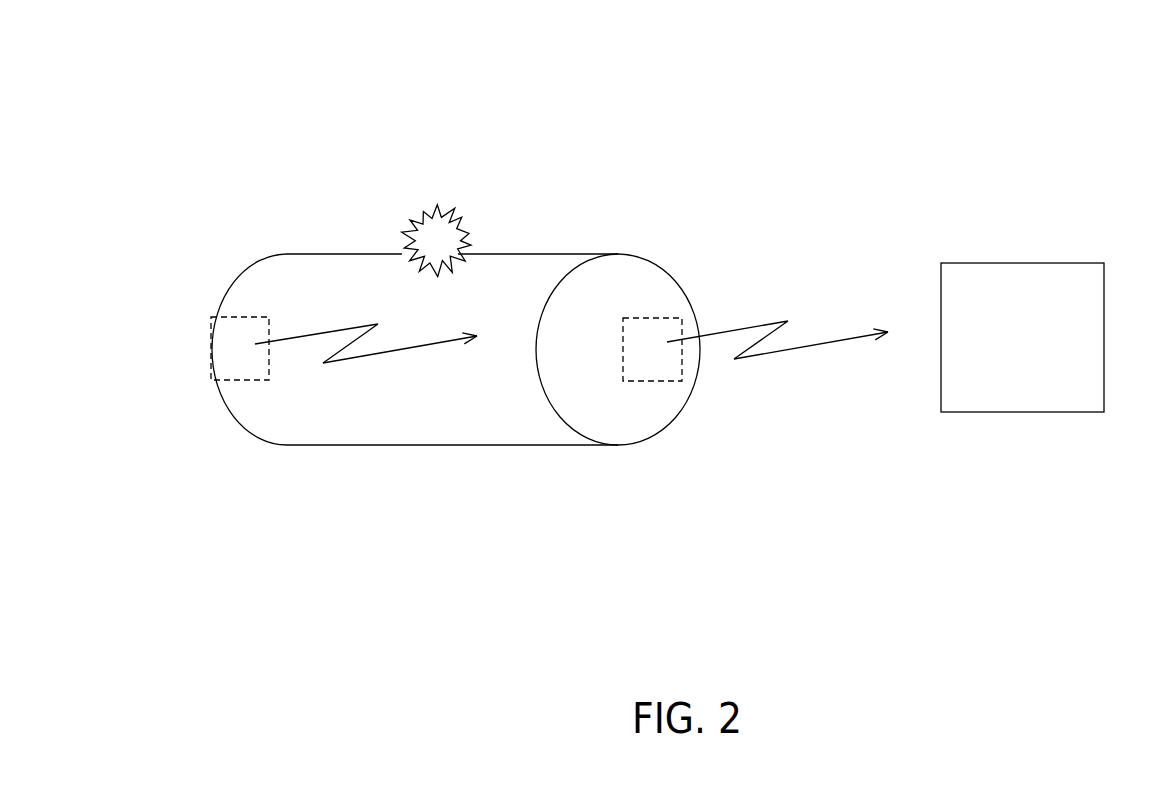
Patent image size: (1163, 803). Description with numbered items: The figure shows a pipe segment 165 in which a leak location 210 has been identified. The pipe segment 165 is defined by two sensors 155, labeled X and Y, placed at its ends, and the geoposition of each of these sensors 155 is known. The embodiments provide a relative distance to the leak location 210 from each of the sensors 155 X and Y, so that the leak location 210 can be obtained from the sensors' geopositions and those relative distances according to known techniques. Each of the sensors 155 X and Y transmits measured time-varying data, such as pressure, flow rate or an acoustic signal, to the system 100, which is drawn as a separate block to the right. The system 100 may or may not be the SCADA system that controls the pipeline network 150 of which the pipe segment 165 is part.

The system 100 is at (1049, 373).
The pipeline network 150 is at (241, 150).
The sensors 155 is at (624, 380).
The pipe segment 165 is at (443, 430).
The leak location 210 is at (473, 243).